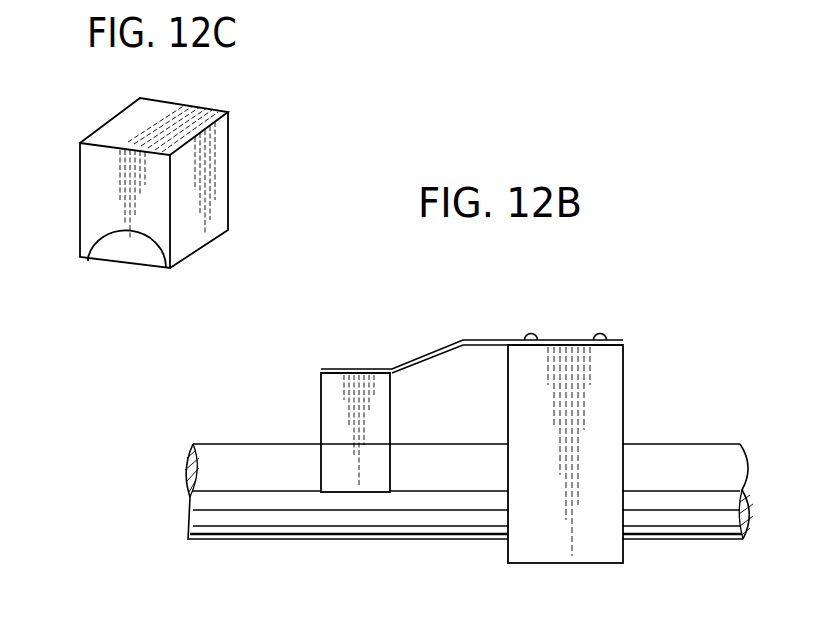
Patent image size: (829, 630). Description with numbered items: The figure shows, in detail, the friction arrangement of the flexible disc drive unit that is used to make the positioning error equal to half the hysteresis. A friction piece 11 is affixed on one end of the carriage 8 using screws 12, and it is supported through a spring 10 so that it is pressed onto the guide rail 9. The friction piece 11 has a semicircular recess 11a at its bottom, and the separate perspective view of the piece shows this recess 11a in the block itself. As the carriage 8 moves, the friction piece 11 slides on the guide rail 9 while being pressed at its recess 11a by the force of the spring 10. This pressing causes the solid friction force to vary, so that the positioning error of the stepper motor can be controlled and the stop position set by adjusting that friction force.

In FIG. 12B, the carriage 8 is at (625, 408).
In FIG. 12B, the guide rail 9 is at (193, 518).
In FIG. 12B, the spring 10 is at (423, 354).
In FIG. 12C, the friction piece 11 is at (85, 180).
In FIG. 12B, the friction piece 11 is at (323, 412).
In FIG. 12C, the semicircular recess 11a is at (130, 243).
In FIG. 12B, the screws 12 is at (535, 335).